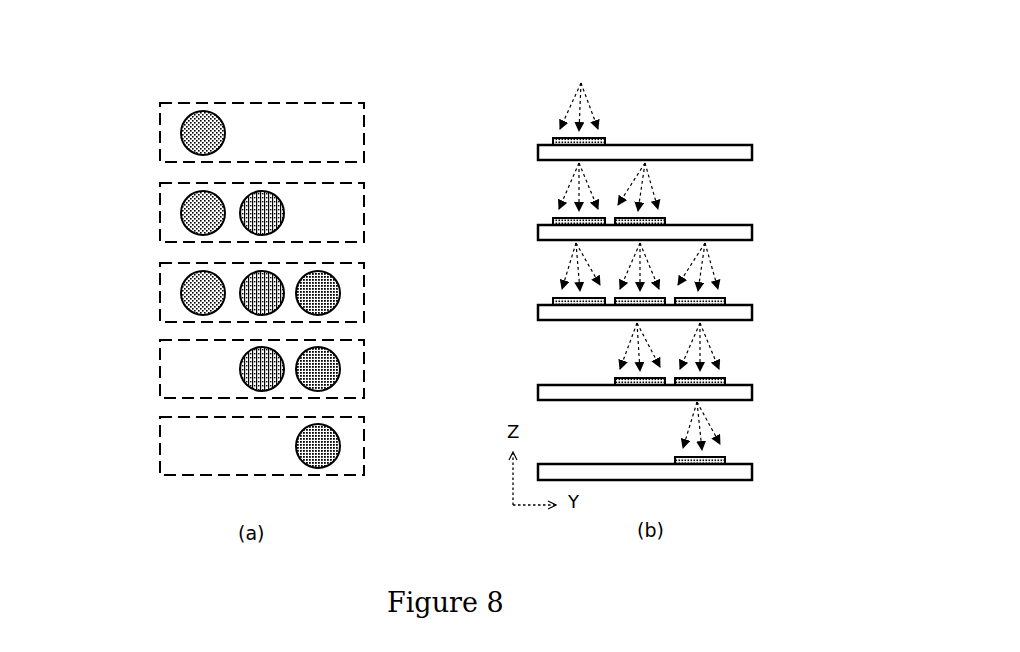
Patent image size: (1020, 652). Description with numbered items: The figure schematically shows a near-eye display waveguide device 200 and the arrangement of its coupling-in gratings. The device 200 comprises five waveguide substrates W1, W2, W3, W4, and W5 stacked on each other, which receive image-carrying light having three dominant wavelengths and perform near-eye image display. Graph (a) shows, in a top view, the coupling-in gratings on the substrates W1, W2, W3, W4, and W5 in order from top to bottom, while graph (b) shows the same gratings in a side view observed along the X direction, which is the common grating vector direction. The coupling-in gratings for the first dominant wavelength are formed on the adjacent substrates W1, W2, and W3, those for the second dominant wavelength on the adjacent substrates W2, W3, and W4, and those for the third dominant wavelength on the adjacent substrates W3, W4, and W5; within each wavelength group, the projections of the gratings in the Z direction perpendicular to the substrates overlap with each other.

The near-eye display waveguide device 200 is at (678, 76).
The waveguide substrate W1 is at (753, 153).
The waveguide substrate W2 is at (753, 233).
The waveguide substrate W3 is at (753, 313).
The waveguide substrate W4 is at (753, 393).
The waveguide substrate W5 is at (753, 473).